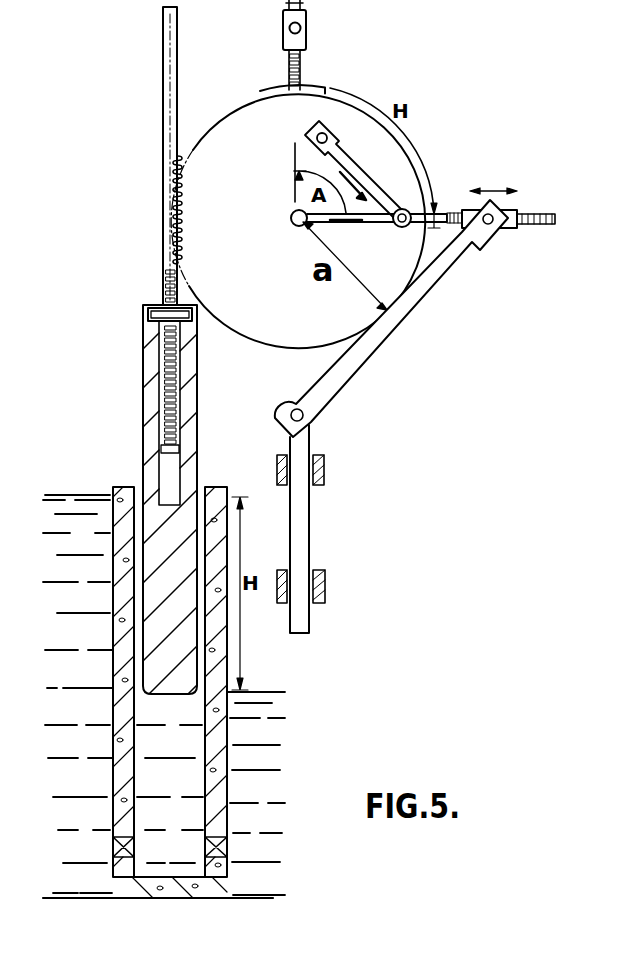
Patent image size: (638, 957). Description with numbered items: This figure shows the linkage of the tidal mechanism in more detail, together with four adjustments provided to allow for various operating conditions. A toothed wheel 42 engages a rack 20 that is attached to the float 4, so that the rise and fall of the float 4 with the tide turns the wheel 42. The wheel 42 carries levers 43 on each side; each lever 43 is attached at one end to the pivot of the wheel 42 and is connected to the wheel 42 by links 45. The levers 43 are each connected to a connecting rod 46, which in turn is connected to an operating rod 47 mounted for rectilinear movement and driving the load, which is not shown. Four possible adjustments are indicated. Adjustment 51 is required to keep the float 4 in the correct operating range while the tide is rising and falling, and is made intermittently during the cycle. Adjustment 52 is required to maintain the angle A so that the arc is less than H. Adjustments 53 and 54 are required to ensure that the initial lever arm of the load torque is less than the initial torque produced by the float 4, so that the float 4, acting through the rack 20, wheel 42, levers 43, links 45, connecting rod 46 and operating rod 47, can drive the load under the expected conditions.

The rack 20 is at (163, 125).
The adjustment 51 is at (147, 320).
The float 4 is at (143, 453).
The toothed wheel 42 is at (266, 325).
The levers 43 is at (300, 80).
The links 45 is at (350, 160).
The adjustment 52 is at (402, 208).
The adjustment 53 is at (505, 236).
The adjustment 54 is at (306, 28).
The connecting rod 46 is at (358, 364).
The operating rod 47 is at (300, 533).